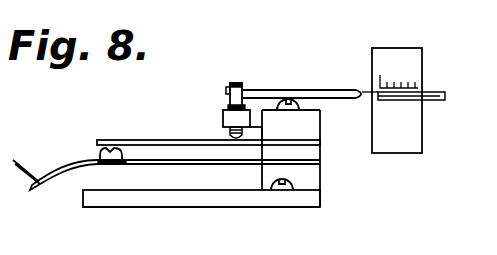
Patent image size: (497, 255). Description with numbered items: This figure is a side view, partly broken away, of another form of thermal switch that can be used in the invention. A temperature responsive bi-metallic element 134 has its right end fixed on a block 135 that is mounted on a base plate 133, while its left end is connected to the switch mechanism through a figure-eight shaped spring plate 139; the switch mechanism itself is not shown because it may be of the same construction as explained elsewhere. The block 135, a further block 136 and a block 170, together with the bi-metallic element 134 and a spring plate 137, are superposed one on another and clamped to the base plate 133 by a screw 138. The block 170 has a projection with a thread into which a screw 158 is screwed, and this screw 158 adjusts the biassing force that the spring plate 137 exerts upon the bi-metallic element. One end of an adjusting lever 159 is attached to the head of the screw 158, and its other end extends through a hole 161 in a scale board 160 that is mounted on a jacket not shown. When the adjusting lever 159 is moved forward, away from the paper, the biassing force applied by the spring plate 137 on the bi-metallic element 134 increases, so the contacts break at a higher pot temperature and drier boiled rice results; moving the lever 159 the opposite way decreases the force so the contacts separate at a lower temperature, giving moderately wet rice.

The base plate 133 is at (260, 198).
The temperature responsive bi-metallic element 134 is at (173, 164).
The block 135 is at (343, 178).
The block 136 is at (302, 155).
The spring plate 137 is at (174, 140).
The screw 138 is at (300, 98).
The figure 8 shaped spring plate 139 is at (60, 160).
The screw 158 is at (238, 83).
The adjusting lever 159 is at (348, 90).
The scale board 160 is at (410, 58).
The hole 161 is at (434, 120).
The block 170 is at (268, 122).